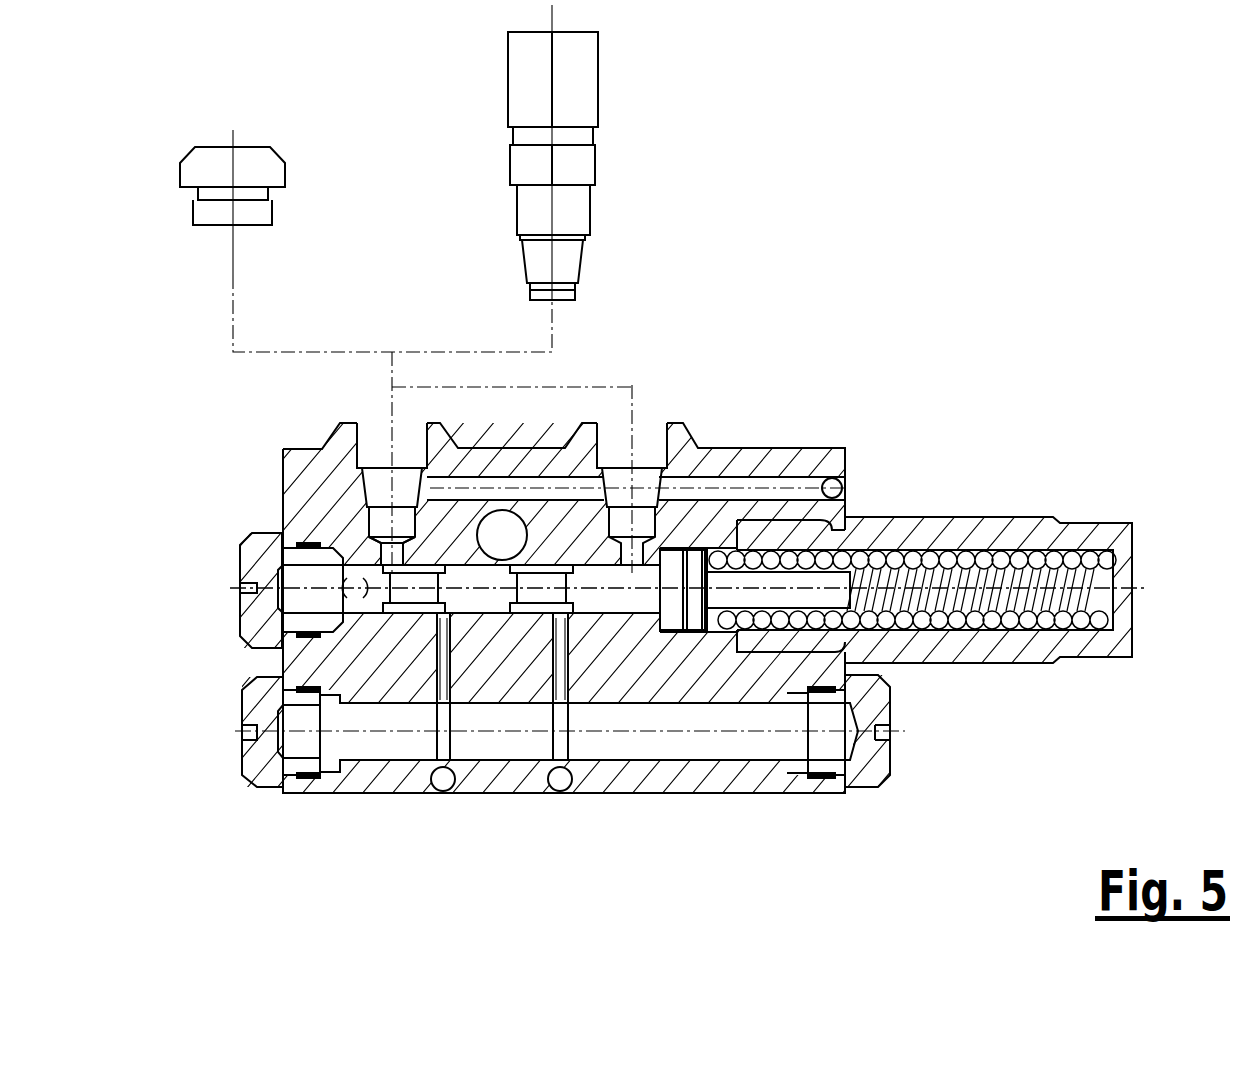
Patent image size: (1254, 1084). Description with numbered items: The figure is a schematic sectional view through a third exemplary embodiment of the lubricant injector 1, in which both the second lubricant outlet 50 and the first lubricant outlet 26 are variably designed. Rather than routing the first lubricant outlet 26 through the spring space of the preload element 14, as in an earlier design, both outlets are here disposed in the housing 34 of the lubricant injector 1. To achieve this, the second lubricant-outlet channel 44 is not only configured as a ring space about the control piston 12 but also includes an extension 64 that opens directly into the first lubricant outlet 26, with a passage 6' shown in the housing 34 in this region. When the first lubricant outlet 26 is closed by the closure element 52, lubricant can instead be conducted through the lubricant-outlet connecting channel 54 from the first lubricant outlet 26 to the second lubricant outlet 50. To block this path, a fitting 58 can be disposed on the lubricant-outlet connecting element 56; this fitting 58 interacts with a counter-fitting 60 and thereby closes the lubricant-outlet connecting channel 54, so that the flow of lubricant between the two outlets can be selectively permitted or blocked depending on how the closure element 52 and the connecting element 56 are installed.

The lubricant injector 1 is at (813, 231).
The transverse bore 6' is at (554, 443).
The valve spool 12 is at (348, 583).
The preload element 14 is at (1107, 522).
The first lubricant outlet 26 is at (560, 485).
The housing 34 is at (297, 483).
The second lubricant-outlet channel 44 is at (618, 596).
The second lubricant outlet 50 is at (390, 440).
The closure element 52 is at (257, 163).
The lubricant-outlet connecting channel 54 is at (600, 472).
The lubricant-outlet connecting element 56 is at (537, 95).
The fitting 58 is at (560, 263).
The counter-fitting 60 is at (382, 530).
The extension 64 is at (740, 447).